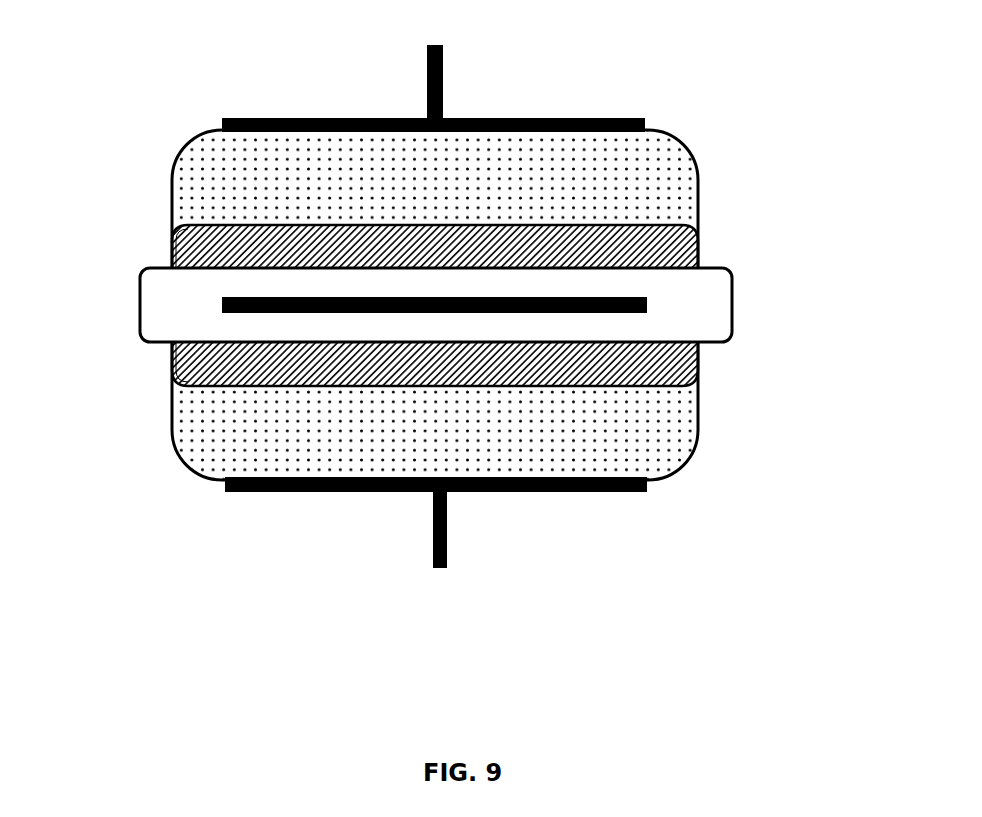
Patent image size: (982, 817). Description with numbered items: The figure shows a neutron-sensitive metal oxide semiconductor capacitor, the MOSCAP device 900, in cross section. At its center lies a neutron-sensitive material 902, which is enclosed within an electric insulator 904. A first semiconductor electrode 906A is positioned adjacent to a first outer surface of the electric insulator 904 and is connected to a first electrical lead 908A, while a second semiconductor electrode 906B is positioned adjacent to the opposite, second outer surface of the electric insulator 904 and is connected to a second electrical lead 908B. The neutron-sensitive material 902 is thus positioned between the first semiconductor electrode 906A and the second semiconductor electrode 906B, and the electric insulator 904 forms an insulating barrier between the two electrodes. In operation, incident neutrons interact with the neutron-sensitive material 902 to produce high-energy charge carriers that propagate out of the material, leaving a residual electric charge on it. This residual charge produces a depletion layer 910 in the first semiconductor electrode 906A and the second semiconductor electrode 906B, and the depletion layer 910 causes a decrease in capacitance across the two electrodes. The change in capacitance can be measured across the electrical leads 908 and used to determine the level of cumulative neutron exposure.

The MOSCAP device 900 is at (672, 88).
The neutron-sensitive material 902 is at (652, 304).
The electric insulator 904 is at (699, 287).
The first semiconductor electrode 906A is at (685, 228).
The second semiconductor electrode 906B is at (683, 382).
The electrical leads 908 is at (434, 306).
The first electrical lead 908A is at (610, 198).
The second electrical lead 908B is at (653, 440).
The depletion layer 910 is at (212, 250).